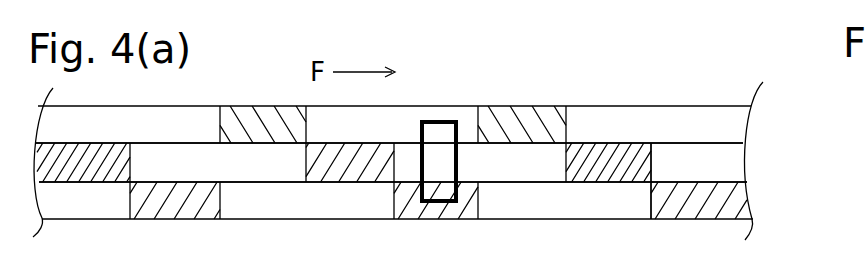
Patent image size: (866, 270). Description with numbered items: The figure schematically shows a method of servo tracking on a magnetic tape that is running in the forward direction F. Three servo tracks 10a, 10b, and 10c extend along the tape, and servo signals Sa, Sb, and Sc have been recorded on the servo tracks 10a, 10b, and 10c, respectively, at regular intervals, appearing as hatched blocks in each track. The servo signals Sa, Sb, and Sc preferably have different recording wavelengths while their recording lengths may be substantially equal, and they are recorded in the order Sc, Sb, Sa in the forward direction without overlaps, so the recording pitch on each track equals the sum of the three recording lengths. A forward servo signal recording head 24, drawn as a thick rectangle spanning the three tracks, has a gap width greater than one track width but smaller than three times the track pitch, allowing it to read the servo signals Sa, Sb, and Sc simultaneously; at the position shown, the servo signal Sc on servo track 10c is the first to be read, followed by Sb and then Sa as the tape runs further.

The servo track 10a is at (738, 120).
The servo track 10b is at (740, 162).
The servo track 10c is at (742, 203).
The forward servo signal recording head 24 is at (444, 120).
The servo signal Sa is at (538, 115).
The servo signal Sb is at (610, 174).
The servo signal Sc is at (705, 210).